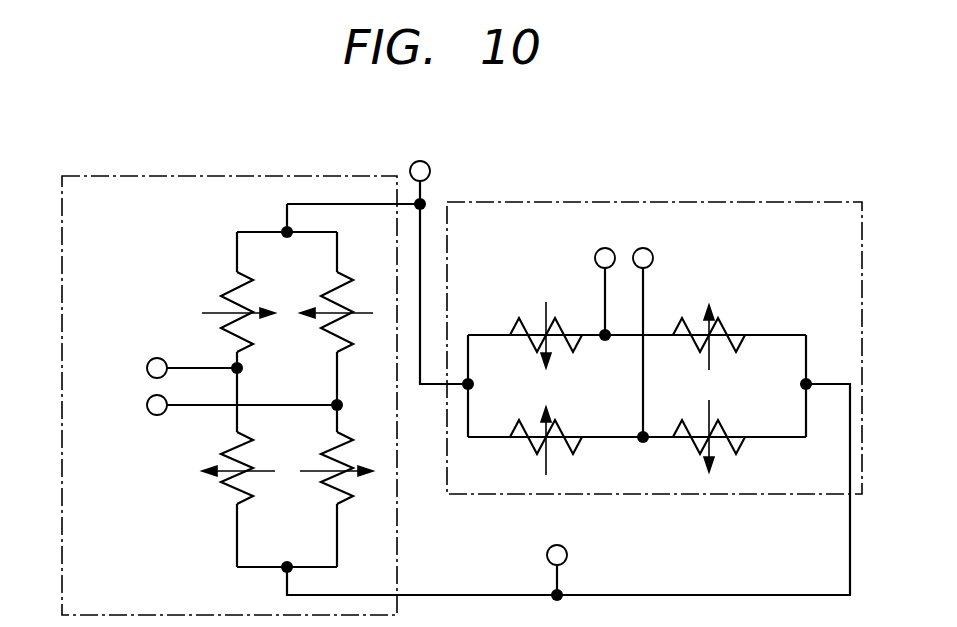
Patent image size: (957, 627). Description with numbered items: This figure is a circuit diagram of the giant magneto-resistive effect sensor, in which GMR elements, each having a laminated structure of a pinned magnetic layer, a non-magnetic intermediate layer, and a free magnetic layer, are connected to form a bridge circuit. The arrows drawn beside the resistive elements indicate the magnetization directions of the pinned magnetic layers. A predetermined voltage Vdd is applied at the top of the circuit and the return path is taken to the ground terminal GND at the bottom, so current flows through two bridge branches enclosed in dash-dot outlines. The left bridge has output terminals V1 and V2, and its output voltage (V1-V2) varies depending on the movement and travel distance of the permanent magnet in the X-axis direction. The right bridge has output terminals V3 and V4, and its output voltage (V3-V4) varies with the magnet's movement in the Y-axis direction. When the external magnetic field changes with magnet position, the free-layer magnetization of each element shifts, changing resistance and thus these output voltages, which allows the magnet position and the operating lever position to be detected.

The output voltage terminal V1 is at (174, 369).
The output voltage terminal V2 is at (224, 406).
The predetermined voltage Vdd is at (419, 155).
The output voltage terminal V3 is at (604, 279).
The output voltage terminal V4 is at (644, 330).
The ground terminal GND is at (556, 556).